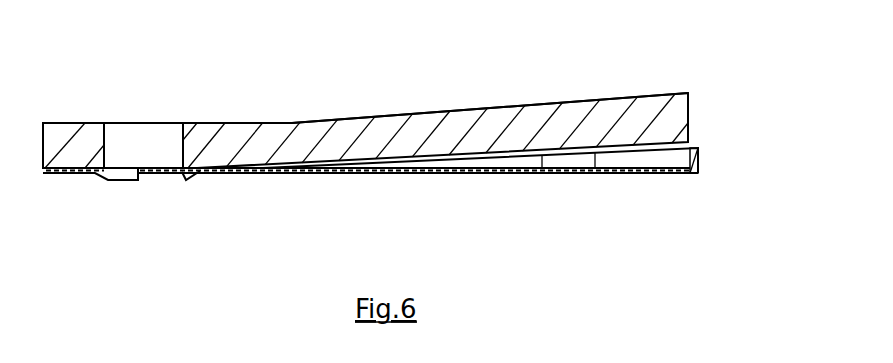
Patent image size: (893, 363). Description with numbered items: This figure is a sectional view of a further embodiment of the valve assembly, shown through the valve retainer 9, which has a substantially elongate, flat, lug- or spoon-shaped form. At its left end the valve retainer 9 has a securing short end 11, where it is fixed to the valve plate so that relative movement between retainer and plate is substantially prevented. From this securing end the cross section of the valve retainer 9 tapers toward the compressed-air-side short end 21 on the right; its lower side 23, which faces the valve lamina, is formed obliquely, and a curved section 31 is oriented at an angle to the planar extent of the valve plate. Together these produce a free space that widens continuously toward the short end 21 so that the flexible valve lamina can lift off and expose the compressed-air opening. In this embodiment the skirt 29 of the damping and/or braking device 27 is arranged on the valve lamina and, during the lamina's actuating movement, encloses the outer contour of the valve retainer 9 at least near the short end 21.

The valve retainer 9 is at (273, 138).
The short end 11 is at (72, 122).
The compressed-air-side short end 21 is at (672, 92).
The lower side 23 is at (603, 171).
The damping and/or braking device 27 is at (709, 170).
The skirt 29 is at (699, 163).
The curved section 31 is at (505, 125).